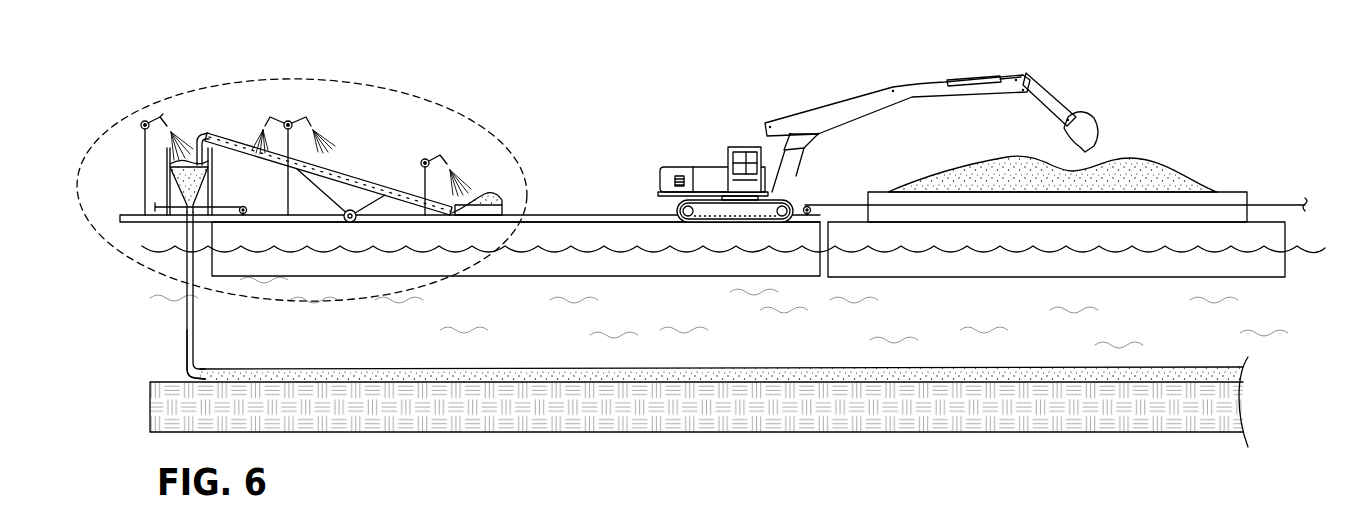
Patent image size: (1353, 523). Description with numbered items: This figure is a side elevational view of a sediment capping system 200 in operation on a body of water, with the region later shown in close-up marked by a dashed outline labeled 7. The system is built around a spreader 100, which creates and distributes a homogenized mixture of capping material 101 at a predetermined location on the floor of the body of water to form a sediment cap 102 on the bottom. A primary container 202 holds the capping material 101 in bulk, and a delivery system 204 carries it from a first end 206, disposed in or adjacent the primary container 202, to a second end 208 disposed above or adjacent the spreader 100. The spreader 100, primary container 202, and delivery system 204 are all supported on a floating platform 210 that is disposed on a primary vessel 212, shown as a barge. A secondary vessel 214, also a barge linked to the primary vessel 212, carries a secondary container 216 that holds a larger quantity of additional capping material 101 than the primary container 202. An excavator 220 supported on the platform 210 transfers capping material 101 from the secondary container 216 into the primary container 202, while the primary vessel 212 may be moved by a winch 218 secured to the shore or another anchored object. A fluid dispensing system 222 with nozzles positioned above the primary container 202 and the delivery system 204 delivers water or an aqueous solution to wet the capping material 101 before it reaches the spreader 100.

The detail region shown in FIG. 7 is at (511, 149).
The spreader 100 is at (183, 118).
The capping material 101 is at (187, 342).
The sediment cap 102 is at (350, 370).
The sediment capping system 200 is at (1132, 98).
The primary container 202 is at (507, 205).
The delivery system 204 is at (343, 157).
The first end 206 is at (480, 236).
The second end 208 is at (224, 117).
The floating platform 210 is at (153, 295).
The primary vessel 212 is at (190, 268).
The secondary vessel 214 is at (1258, 268).
The secondary container 216 is at (1240, 192).
The winch 218 is at (810, 205).
The excavator 220 is at (819, 107).
The fluid dispensing system 222 is at (289, 120).